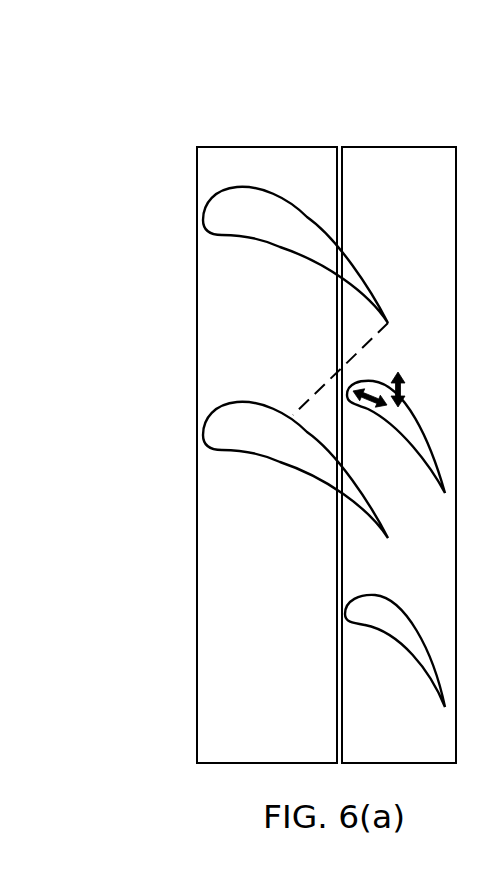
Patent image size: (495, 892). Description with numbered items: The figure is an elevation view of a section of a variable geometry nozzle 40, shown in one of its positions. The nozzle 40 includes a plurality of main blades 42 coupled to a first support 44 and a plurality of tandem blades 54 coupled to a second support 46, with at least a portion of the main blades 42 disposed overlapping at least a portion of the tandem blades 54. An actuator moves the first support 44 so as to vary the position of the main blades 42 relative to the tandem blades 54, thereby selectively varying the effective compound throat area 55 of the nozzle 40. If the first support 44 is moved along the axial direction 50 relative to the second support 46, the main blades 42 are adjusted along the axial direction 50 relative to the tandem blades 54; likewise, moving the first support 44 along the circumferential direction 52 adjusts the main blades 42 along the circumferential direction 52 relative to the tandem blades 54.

The variable geometry nozzle 40 is at (145, 66).
The main blades 42 is at (245, 228).
The first support 44 is at (274, 147).
The second support 46 is at (398, 147).
The axial direction 50 is at (368, 408).
The circumferential direction 52 is at (400, 377).
The tandem blades 54 is at (427, 457).
The effective compound throat area 55 is at (320, 386).